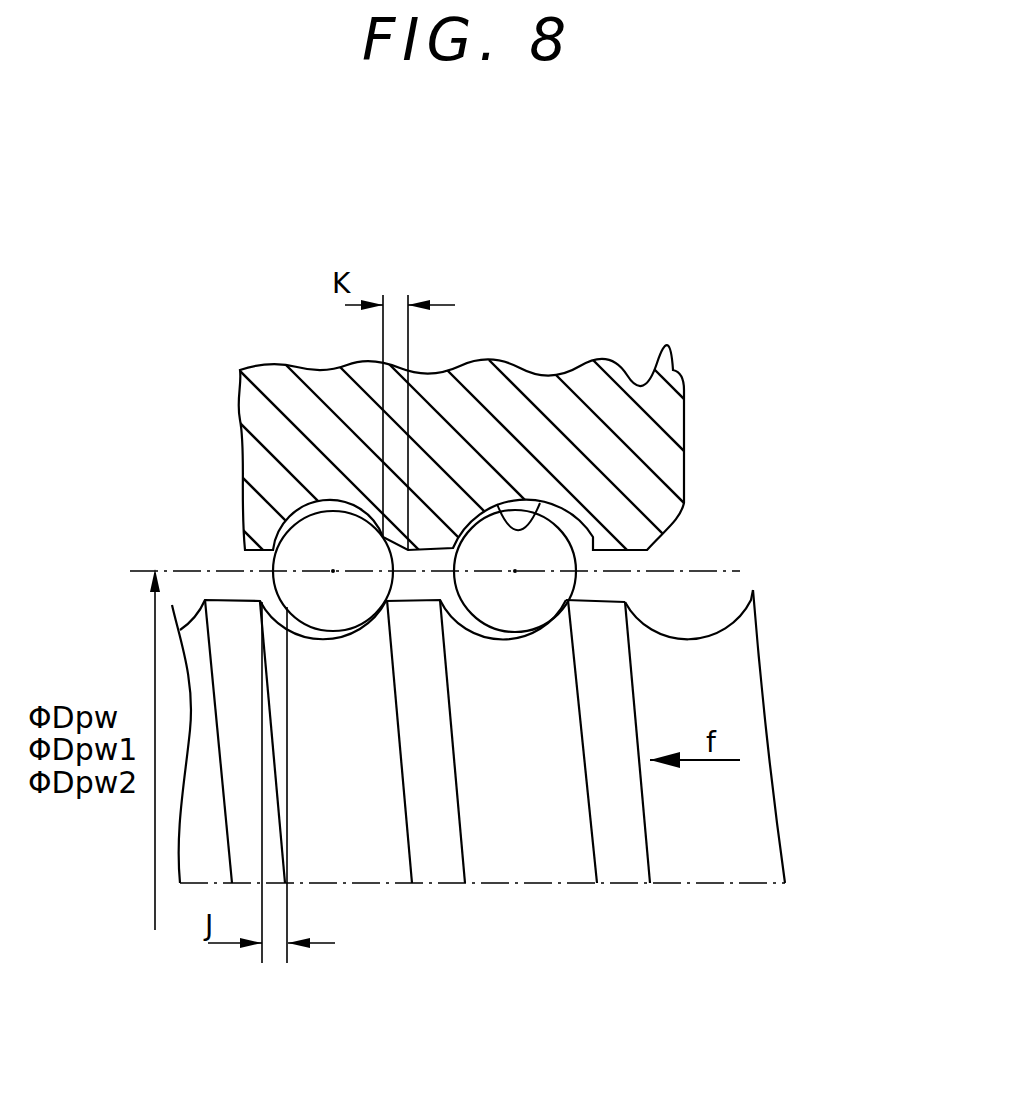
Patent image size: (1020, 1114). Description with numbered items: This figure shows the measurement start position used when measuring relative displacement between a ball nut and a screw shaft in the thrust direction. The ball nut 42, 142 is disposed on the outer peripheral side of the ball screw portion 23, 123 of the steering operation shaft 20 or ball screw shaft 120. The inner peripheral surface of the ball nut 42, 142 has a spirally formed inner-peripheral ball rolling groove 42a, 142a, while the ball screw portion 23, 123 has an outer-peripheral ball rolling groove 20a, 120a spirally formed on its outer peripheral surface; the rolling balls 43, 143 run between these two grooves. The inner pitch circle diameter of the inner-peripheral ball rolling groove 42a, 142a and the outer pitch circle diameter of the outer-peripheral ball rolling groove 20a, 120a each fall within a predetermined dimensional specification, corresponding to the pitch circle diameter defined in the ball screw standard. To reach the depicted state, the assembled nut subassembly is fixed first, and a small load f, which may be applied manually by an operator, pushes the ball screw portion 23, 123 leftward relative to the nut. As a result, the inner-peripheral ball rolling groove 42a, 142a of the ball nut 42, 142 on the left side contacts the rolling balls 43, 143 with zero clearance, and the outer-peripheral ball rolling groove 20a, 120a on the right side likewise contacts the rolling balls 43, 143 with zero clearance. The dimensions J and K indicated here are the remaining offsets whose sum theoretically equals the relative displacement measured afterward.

The ball nut 42 is at (459, 410).
The ball nut 142 is at (283, 400).
The inner-peripheral ball rolling groove 42a is at (619, 388).
The inner-peripheral ball rolling groove 142a is at (556, 548).
The rolling balls 43 is at (548, 480).
The rolling balls 143 is at (552, 558).
The ball screw portion 23 is at (746, 491).
The ball screw portion 123 is at (598, 602).
The outer-peripheral ball rolling groove 20a is at (774, 539).
The outer-peripheral ball rolling groove 120a is at (703, 637).
The steering operation shaft 20 is at (478, 787).
The ball screw shaft 120 is at (515, 835).